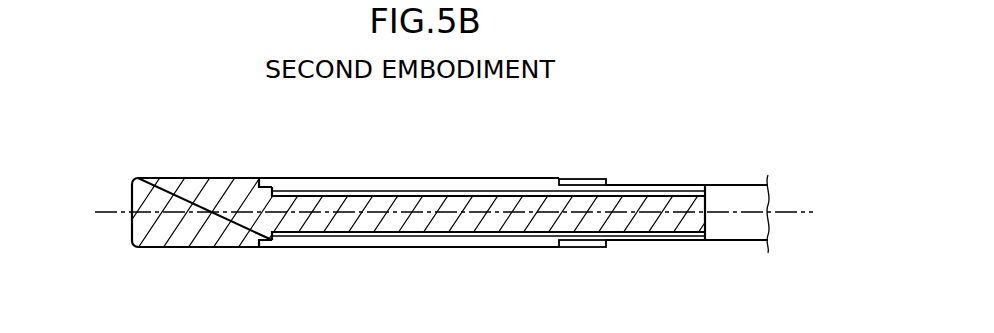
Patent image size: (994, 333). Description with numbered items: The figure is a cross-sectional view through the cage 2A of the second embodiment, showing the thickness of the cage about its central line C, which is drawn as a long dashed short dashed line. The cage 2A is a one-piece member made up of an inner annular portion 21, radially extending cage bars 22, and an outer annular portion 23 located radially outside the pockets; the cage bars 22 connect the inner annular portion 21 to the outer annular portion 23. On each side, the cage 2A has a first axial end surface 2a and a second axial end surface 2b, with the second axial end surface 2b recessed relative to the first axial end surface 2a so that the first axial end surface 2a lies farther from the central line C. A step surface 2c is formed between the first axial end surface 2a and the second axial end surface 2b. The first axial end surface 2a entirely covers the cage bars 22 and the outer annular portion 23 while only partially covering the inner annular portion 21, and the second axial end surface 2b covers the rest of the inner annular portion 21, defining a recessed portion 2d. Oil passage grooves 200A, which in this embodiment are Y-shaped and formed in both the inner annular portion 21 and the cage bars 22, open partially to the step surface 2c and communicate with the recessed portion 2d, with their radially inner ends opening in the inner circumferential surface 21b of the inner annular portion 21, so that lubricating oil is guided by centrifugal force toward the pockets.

The cage 2A is at (113, 164).
The outer annular portion 23 is at (147, 200).
The cage bars 22 is at (307, 205).
The inner annular portion 21 is at (463, 203).
The inner circumferential surface 21b is at (708, 218).
The oil passage grooves 200A is at (377, 185).
The first axial end surface 2a is at (525, 178).
The step surface 2c is at (583, 180).
The second axial end surface 2b is at (647, 185).
The recessed portion 2d is at (703, 178).
The central line C is at (802, 210).